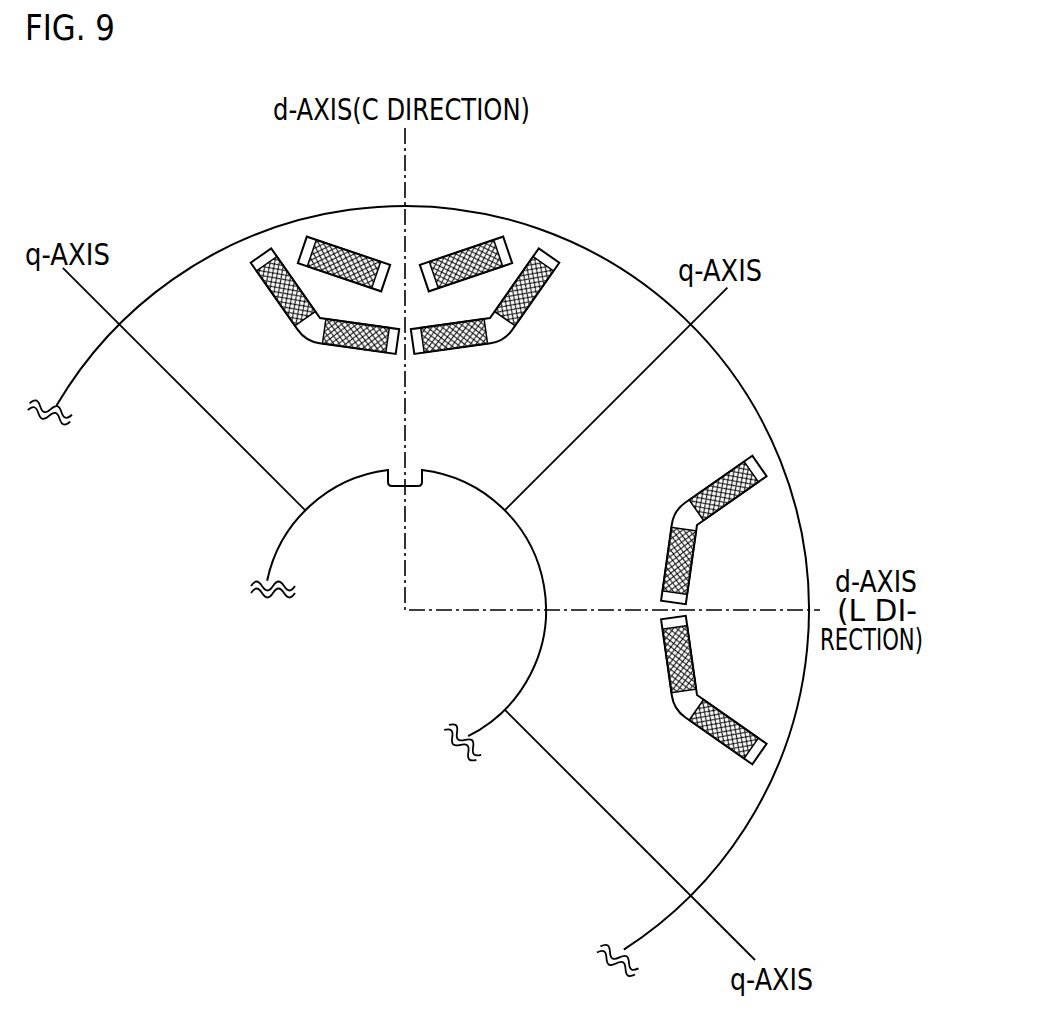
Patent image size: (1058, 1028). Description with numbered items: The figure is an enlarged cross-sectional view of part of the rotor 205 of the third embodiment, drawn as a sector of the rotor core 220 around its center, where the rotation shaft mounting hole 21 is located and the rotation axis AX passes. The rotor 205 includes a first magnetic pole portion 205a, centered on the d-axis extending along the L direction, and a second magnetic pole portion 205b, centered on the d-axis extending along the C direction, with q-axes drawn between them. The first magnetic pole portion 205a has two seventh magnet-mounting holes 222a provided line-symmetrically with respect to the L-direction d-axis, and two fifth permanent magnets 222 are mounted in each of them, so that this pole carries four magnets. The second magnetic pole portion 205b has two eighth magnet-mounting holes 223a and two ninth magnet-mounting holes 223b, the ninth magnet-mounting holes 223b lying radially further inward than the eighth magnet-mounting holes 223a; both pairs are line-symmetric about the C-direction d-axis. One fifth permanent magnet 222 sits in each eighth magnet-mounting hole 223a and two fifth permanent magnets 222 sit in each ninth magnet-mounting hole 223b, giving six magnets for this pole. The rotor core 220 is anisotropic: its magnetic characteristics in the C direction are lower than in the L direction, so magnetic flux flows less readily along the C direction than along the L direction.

The rotor 205 is at (786, 899).
The first magnetic pole portion 205a is at (738, 378).
The second magnetic pole portion 205b is at (178, 275).
The rotor core 220 is at (660, 925).
The rotation shaft mounting hole 21 is at (540, 650).
The fifth permanent magnet 222 is at (717, 750).
The seventh magnet-mounting hole 222a is at (733, 770).
The eighth magnet-mounting hole 223a is at (482, 238).
The ninth magnet-mounting hole 223b is at (562, 284).
The rotation axis AX is at (405, 610).